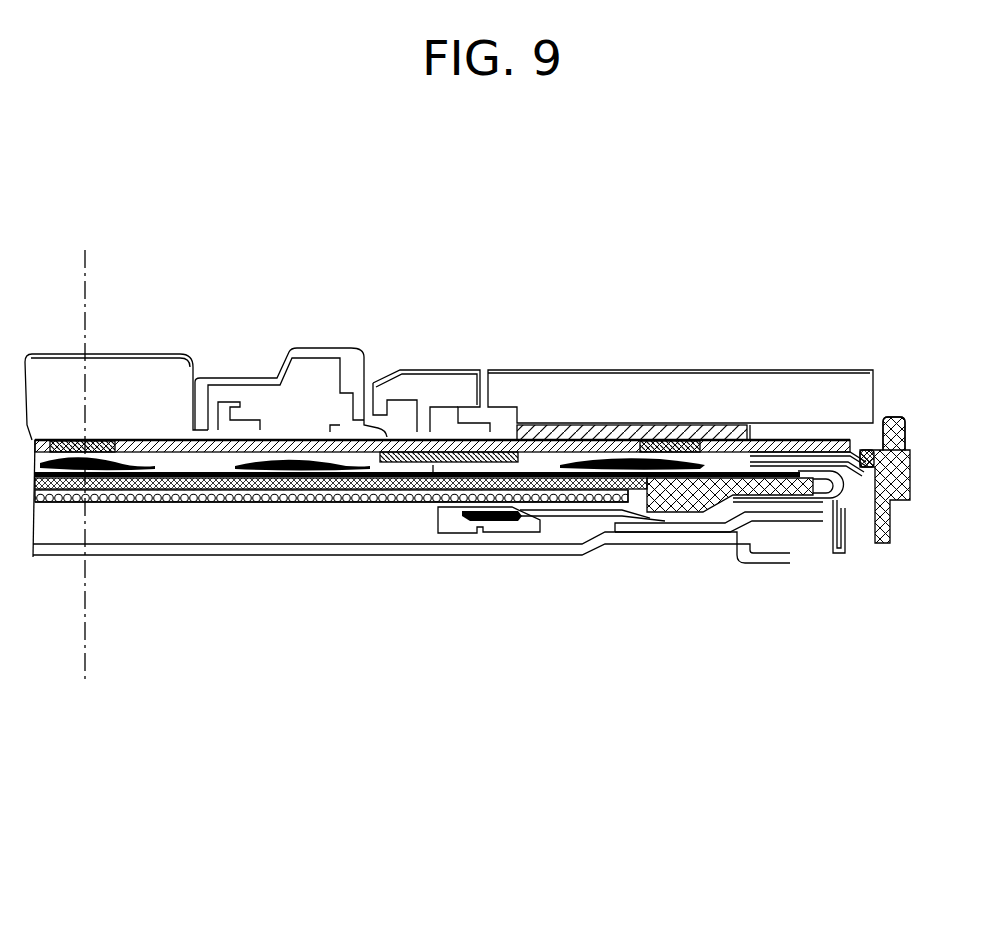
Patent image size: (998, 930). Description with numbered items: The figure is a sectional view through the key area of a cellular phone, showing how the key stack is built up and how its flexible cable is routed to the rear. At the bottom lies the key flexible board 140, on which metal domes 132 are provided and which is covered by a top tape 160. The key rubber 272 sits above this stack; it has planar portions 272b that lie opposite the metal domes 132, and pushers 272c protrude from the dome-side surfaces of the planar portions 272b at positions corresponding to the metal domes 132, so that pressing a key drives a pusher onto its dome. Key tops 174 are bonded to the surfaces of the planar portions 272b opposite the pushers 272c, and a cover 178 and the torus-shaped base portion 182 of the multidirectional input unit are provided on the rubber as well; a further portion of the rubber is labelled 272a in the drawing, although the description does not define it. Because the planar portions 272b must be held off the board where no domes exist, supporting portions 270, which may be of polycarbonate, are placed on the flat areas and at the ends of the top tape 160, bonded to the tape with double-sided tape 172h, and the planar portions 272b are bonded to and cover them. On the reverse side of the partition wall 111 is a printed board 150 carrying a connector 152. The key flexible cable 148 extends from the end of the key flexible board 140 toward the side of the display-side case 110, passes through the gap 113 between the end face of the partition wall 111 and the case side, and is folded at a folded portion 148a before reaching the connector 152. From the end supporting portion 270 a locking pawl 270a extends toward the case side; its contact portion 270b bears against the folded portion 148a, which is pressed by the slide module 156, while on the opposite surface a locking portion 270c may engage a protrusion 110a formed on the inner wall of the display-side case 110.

The key tops 174 is at (138, 372).
The planar portions 272b is at (217, 440).
The base portion 182 is at (322, 362).
The cover 178 is at (418, 378).
The supporting portions 270 is at (497, 452).
The key rubber 272 is at (710, 396).
The first adhesive portion 272a is at (822, 455).
The pushers 272c is at (318, 464).
The locking pawl 270a is at (882, 470).
The contact portion 270b is at (827, 503).
The locking portion 270c is at (905, 447).
The protrusion 110a is at (868, 443).
The display-side case 110 is at (895, 512).
The gap 113 is at (912, 487).
The partition wall 111 is at (127, 505).
The top tape 160 is at (187, 505).
The metal domes 132 is at (257, 505).
The printed board 150 is at (381, 490).
The key flexible board 140 is at (563, 470).
The connector 152 is at (458, 530).
The double-sided tape 172h is at (435, 465).
The slide module 156 is at (511, 548).
The key flexible cable 148 is at (727, 500).
The folded portion 148a is at (845, 487).